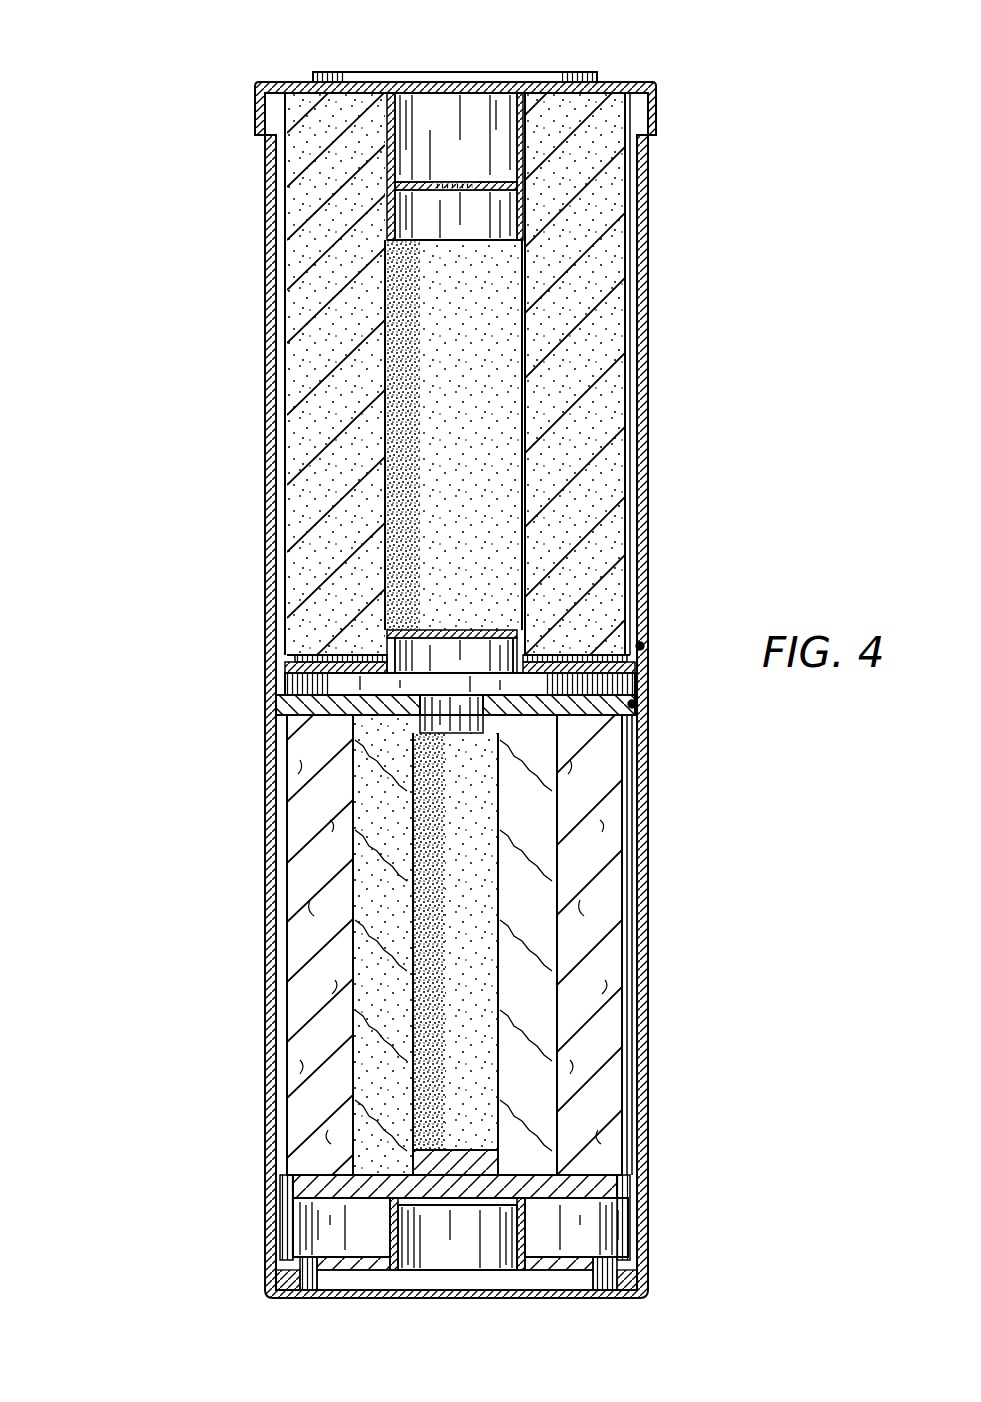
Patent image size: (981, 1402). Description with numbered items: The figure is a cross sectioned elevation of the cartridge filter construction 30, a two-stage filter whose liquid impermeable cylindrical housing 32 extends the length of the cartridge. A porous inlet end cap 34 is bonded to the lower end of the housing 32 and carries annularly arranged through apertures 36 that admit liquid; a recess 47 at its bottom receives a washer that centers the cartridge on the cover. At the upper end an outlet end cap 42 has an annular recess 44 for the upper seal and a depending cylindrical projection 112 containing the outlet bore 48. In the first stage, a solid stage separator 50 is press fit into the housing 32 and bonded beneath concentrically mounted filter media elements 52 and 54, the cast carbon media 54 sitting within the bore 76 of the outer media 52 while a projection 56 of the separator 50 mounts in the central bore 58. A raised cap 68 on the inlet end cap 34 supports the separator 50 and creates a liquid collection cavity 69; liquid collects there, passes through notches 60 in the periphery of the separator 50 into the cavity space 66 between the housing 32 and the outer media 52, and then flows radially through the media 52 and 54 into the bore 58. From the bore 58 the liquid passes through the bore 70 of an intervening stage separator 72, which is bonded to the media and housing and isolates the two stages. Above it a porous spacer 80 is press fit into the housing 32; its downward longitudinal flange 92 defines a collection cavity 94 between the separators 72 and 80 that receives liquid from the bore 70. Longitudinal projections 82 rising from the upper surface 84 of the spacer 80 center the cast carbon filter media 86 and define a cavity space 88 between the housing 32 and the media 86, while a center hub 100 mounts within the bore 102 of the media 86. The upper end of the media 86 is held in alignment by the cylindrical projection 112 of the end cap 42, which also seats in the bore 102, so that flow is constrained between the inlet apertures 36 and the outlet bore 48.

The cartridge filter construction 30 is at (150, 438).
The cylindrical housing 32 is at (648, 746).
The porous inlet end cap 34 is at (633, 1297).
The through apertures 36 is at (310, 1295).
The outlet end cap 42 is at (656, 100).
The annular recess 44 is at (492, 72).
The recess 47 is at (373, 1292).
The outlet bore 48 is at (452, 180).
The stage separator 50 is at (308, 1176).
The filter media element 52 is at (607, 1082).
The filter media element 54 is at (535, 1030).
The projection 56 is at (500, 1155).
The bore 58 is at (412, 965).
The notches 60 is at (630, 1185).
The cavity space 66 is at (625, 970).
The raised cap 68 is at (513, 1263).
The liquid collection cavity 69 is at (340, 1215).
The bore 70 is at (483, 718).
The stage separator 72 is at (632, 704).
The bore 76 is at (353, 833).
The porous spacer 80 is at (640, 646).
The longitudinal projections 82 is at (275, 640).
The upper surface 84 is at (512, 655).
The carbon filter media 86 is at (585, 497).
The cavity space 88 is at (630, 338).
The longitudinal flange 92 is at (277, 677).
The collection cavity 94 is at (297, 685).
The center hub 100 is at (520, 632).
The bore 102 is at (525, 432).
The cylindrical projection 112 is at (523, 222).